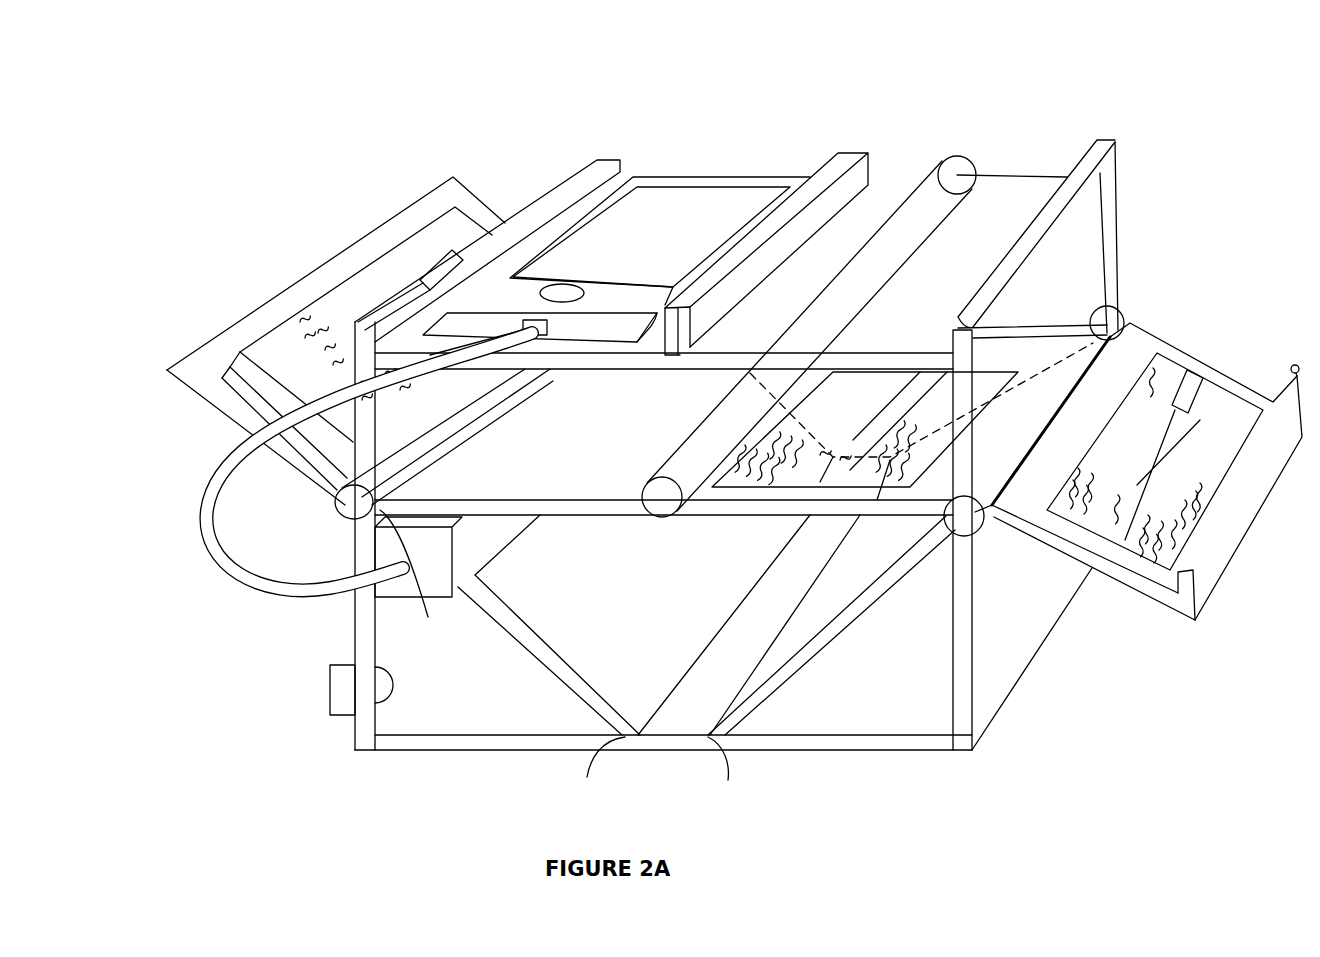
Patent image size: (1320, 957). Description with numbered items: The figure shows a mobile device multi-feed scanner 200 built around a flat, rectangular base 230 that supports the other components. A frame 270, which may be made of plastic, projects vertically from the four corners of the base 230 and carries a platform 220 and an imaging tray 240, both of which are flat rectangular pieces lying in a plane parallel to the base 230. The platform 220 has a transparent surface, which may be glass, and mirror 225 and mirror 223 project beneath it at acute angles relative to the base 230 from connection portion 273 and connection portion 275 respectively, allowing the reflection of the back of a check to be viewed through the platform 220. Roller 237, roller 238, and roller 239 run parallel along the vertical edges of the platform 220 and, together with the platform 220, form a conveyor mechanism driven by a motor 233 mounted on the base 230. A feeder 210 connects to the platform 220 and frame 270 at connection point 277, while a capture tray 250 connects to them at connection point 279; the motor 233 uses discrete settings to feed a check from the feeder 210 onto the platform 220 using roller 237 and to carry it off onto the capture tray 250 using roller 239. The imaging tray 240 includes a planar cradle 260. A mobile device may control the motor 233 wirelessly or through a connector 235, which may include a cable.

The mobile device multi-feed scanner 200 is at (295, 138).
The feeder 210 is at (345, 255).
The platform 220 is at (570, 455).
The mirror 223 is at (843, 590).
The mirror 225 is at (647, 620).
The base 230 is at (843, 697).
The motor 233 is at (457, 588).
The connector 235 is at (228, 590).
The roller 237 is at (340, 503).
The roller 238 is at (720, 428).
The roller 239 is at (962, 522).
The imaging tray 240 is at (1000, 195).
The capture tray 250 is at (1145, 340).
The cradle 260 is at (865, 150).
The frame 270 is at (362, 612).
The connection portion 273 is at (595, 776).
The connection portion 275 is at (731, 775).
The connection point 277 is at (412, 579).
The connection point 279 is at (1046, 421).